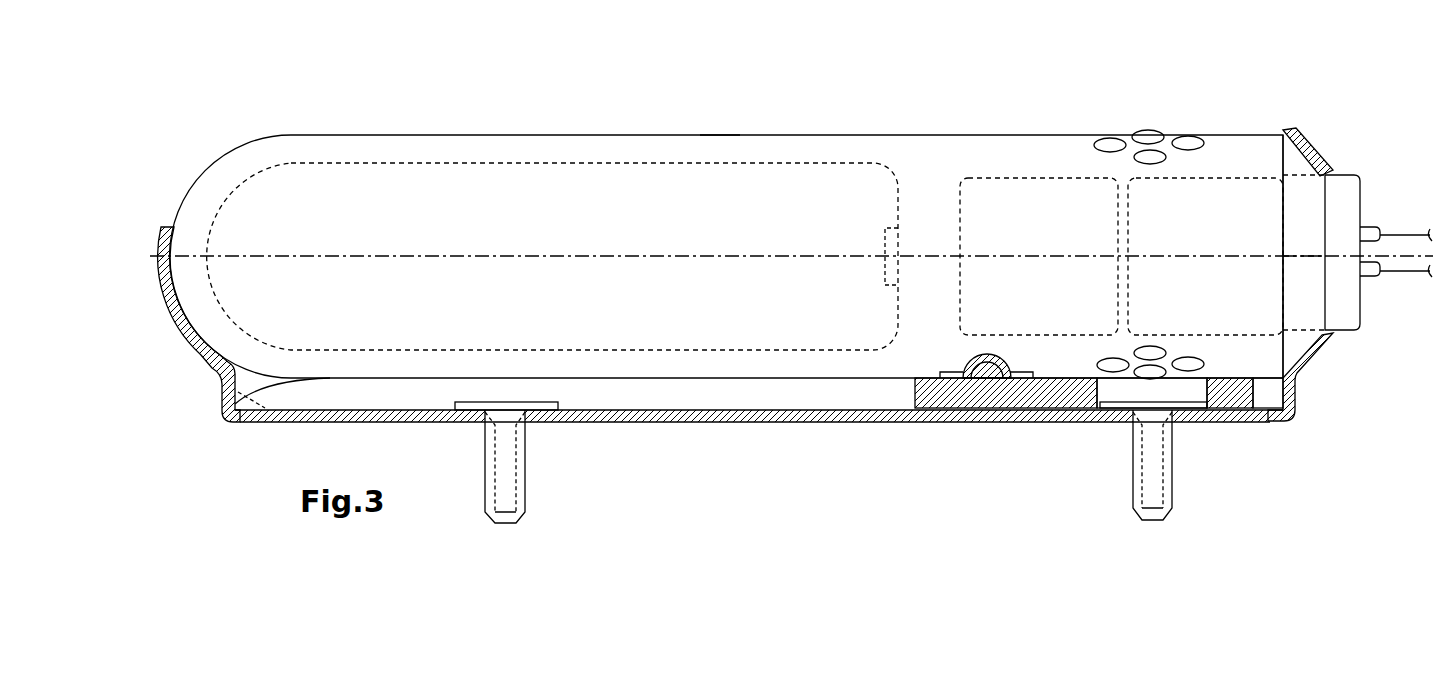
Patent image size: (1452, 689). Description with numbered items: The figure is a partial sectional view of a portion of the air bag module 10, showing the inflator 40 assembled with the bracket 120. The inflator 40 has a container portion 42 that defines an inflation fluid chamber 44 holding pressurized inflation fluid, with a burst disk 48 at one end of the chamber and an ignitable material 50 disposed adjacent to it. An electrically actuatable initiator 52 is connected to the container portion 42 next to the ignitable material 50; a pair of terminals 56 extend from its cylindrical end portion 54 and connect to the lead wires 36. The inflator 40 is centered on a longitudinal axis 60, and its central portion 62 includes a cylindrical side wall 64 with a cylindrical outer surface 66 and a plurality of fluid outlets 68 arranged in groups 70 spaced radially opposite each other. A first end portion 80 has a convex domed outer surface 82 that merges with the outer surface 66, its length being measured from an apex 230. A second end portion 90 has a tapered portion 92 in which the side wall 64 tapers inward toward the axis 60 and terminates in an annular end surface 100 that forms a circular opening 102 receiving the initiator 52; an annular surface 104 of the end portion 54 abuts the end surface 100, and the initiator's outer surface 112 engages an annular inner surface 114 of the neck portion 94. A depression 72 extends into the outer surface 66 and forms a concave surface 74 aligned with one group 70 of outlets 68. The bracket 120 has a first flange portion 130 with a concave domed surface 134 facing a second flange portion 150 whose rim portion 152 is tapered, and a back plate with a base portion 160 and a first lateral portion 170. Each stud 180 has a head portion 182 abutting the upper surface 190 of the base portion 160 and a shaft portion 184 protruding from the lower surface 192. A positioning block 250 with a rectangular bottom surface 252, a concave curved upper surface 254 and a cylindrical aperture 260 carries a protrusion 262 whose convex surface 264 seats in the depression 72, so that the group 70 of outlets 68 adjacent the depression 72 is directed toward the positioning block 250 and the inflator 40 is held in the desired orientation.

The air bag module 10 is at (416, 96).
The lead wires 36 is at (1402, 262).
The inflator 40 is at (650, 380).
The container portion 42 is at (580, 380).
The inflation fluid chamber 44 is at (500, 198).
The burst disk 48 is at (885, 240).
The ignitable material 50 is at (1018, 210).
The initiator 52 is at (1208, 208).
The cylindrical end portion 54 is at (1345, 200).
The terminals 56 is at (1367, 232).
The longitudinal axis 60 is at (340, 262).
The central portion 62 is at (663, 208).
The cylindrical side wall 64 is at (718, 135).
The cylindrical outer surface 66 is at (792, 133).
The fluid outlets 68 is at (1150, 157).
The groups 70 is at (1163, 103).
The depression 72 is at (950, 355).
The concave surface 74 is at (973, 365).
The first end portion 80 is at (202, 347).
The domed outer surface 82 is at (170, 320).
The second end portion 90 is at (1270, 362).
The tapered portion 92 is at (1305, 150).
The neck portion 94 is at (1337, 318).
The annular end surface 100 is at (1330, 185).
The circular opening 102 is at (1342, 282).
The annular surface 104 is at (1325, 212).
The outer surface 112 is at (1300, 368).
The annular inner surface 114 is at (1285, 320).
The bracket 120 is at (700, 410).
The first flange portion 130 is at (165, 240).
The concave domed surface 134 is at (185, 300).
The second flange portion 150 is at (1300, 342).
The rim portion 152 is at (1333, 163).
The base portion 160 is at (735, 420).
The first lateral portion 170 is at (608, 400).
The stud 180 is at (505, 455).
The head portion 182 is at (515, 405).
The shaft portion 184 is at (512, 490).
The upper surface 190 is at (352, 405).
The lower surface 192 is at (400, 420).
The apex 230 is at (205, 255).
The positioning block 250 is at (950, 390).
The rectangular bottom surface 252 is at (1030, 415).
The concave curved upper surface 254 is at (1060, 365).
The cylindrical aperture 260 is at (1190, 380).
The protrusion 262 is at (990, 360).
The convex surface 264 is at (1005, 355).